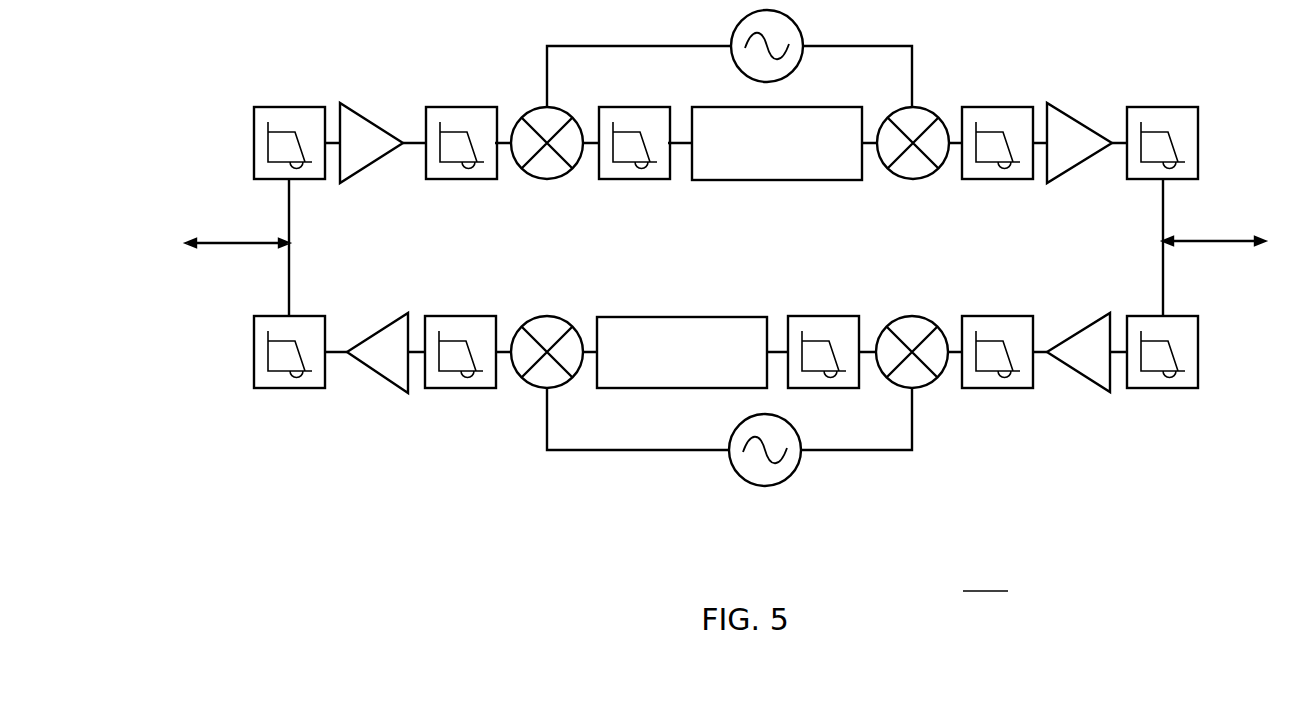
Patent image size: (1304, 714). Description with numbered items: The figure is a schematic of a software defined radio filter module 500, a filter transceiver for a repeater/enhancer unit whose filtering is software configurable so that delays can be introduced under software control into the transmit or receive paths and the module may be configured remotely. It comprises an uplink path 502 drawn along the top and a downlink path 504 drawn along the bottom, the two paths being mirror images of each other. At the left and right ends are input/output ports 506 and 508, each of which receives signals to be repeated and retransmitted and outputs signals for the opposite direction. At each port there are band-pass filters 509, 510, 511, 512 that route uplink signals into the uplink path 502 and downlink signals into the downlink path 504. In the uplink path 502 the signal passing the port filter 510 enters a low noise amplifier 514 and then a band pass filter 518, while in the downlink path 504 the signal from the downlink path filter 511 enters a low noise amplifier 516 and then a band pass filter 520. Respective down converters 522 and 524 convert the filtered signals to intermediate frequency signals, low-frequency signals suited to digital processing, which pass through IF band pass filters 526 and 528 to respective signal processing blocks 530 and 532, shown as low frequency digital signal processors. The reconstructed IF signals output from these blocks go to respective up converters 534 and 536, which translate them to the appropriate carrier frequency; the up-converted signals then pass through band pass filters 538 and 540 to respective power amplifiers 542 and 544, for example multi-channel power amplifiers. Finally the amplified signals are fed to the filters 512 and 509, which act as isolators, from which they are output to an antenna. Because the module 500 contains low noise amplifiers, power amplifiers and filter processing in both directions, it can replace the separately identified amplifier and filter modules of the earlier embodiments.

The SDR filter module 500 is at (985, 577).
The uplink path 502 is at (285, 56).
The downlink path 504 is at (1110, 470).
The input/output port 506 is at (218, 244).
The input/output port 508 is at (1225, 243).
The band-pass filter 509 is at (318, 316).
The band-pass filter 510 is at (253, 163).
The band-pass filter 511 is at (1130, 316).
The band-pass filter 512 is at (1132, 179).
The low noise amplifier 514 is at (374, 160).
The low noise amplifier 516 is at (1093, 385).
The band pass filter 518 is at (447, 107).
The band pass filter 520 is at (1010, 316).
The down converter 522 is at (536, 178).
The down converter 524 is at (908, 318).
The IF band pass filter 526 is at (618, 180).
The IF band pass filter 528 is at (838, 388).
The signal processing block 530 is at (822, 107).
The signal processing block 532 is at (672, 317).
The up converter 534 is at (905, 178).
The up converter 536 is at (538, 322).
The band pass filter 538 is at (985, 107).
The band pass filter 540 is at (445, 316).
The power amplifier 542 is at (1047, 183).
The power amplifier 544 is at (378, 368).